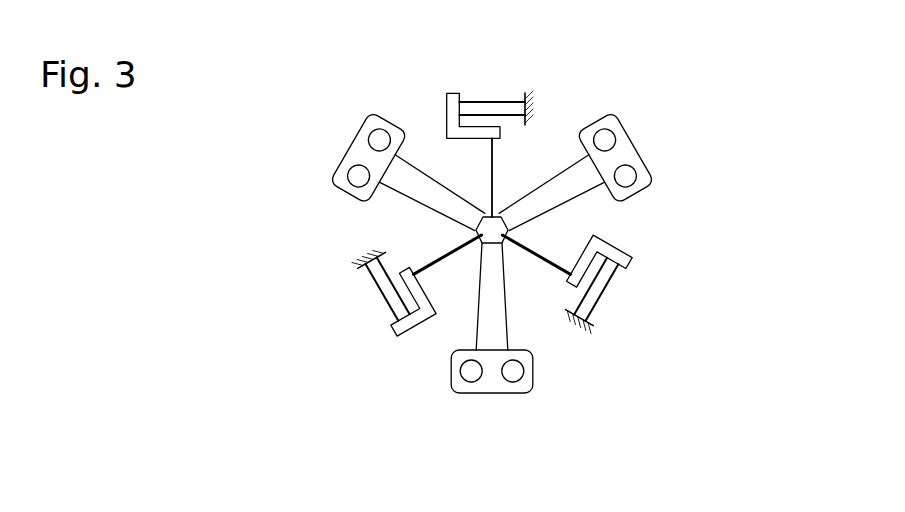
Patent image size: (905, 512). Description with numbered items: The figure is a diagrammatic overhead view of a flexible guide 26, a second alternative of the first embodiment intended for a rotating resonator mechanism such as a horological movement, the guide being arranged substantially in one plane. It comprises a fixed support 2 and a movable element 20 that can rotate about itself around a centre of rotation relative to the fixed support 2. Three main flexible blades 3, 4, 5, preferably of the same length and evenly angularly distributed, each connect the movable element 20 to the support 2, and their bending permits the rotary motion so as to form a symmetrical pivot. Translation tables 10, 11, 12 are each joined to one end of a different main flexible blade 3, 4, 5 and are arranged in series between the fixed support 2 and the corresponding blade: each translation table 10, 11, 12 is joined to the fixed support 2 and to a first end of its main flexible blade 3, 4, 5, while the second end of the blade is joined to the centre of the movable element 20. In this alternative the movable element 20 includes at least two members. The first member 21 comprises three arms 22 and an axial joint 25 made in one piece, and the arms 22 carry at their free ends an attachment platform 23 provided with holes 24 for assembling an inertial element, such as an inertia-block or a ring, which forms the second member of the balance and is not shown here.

The fixed support 2 is at (530, 93).
The main flexible blade 3 is at (491, 175).
The main flexible blade 4 is at (444, 264).
The main flexible blade 5 is at (556, 256).
The translation table 10 is at (481, 89).
The translation table 11 is at (634, 291).
The translation table 12 is at (366, 330).
The movable element 20 is at (665, 163).
The first member 21 is at (394, 223).
The arms 22 is at (563, 187).
The attachment platform 23 is at (492, 382).
The holes 24 is at (351, 177).
The axial joint 25 is at (493, 228).
The flexible guide 26 is at (304, 62).